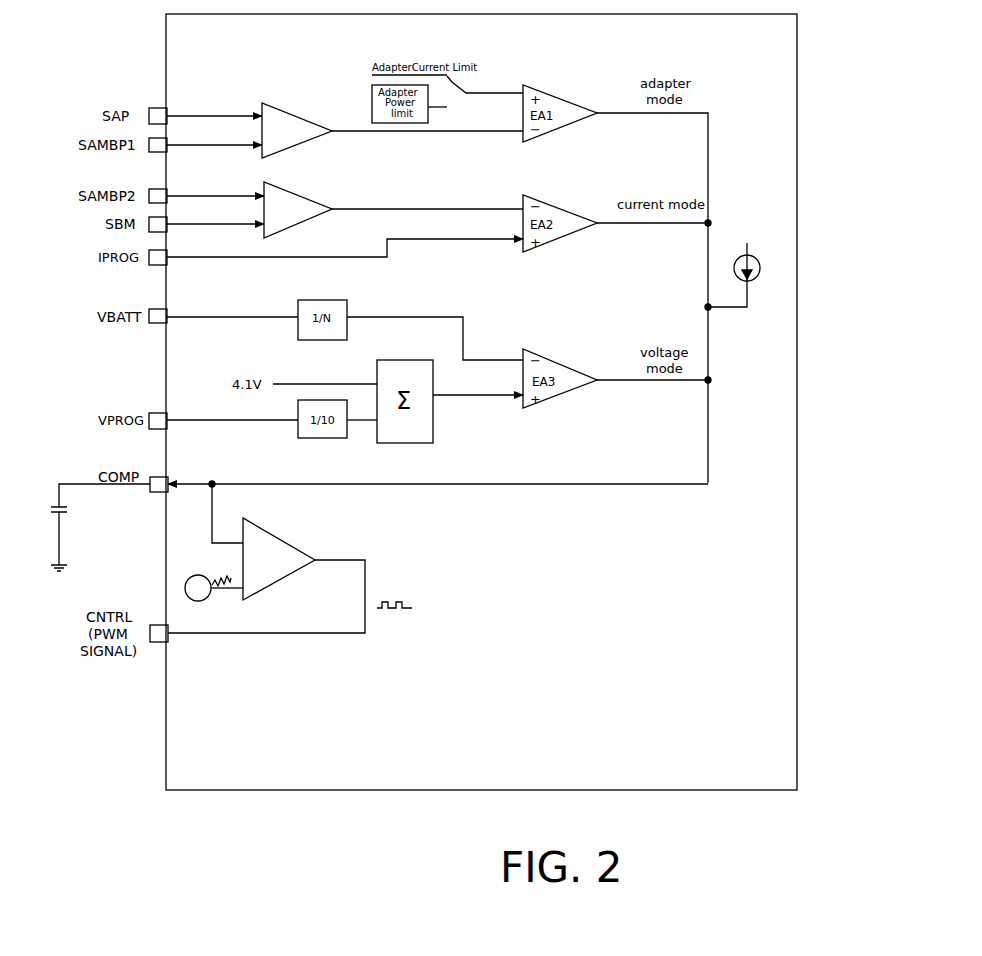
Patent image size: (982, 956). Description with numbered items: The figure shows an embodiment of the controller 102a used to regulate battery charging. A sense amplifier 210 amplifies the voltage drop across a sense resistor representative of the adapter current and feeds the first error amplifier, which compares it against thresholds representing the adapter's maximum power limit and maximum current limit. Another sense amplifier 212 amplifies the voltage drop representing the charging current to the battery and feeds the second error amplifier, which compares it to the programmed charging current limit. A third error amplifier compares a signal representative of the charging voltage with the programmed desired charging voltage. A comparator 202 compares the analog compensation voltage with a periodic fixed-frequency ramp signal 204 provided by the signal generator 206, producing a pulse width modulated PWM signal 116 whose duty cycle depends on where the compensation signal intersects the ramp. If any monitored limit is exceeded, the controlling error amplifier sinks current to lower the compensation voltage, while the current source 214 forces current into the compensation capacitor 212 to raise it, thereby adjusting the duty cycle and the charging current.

The controller 102a is at (797, 135).
The sense amplifier 210 is at (311, 140).
The sense amplifier 212 is at (311, 218).
The current source 214 is at (760, 266).
The comparator 202 is at (276, 538).
The ramp signal 204 is at (230, 578).
The signal generator 206 is at (196, 601).
The PWM signal 116 is at (388, 612).